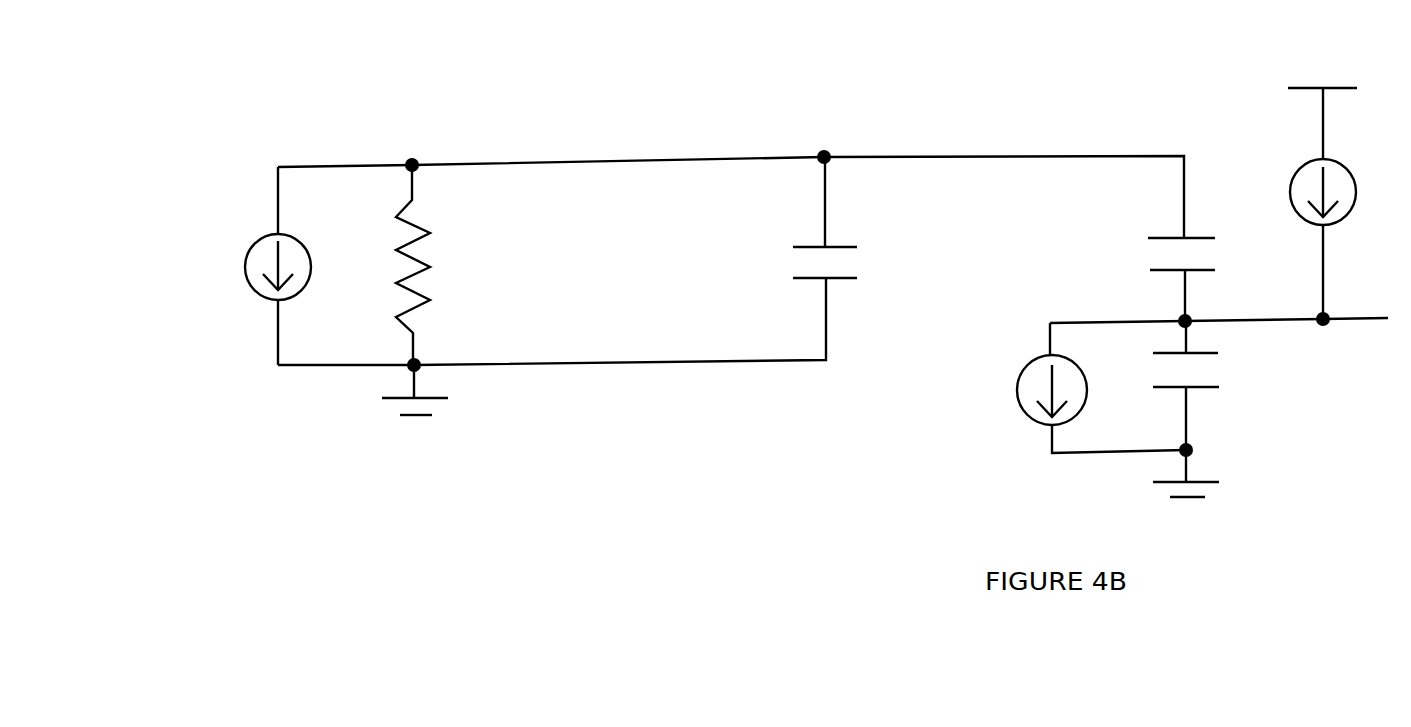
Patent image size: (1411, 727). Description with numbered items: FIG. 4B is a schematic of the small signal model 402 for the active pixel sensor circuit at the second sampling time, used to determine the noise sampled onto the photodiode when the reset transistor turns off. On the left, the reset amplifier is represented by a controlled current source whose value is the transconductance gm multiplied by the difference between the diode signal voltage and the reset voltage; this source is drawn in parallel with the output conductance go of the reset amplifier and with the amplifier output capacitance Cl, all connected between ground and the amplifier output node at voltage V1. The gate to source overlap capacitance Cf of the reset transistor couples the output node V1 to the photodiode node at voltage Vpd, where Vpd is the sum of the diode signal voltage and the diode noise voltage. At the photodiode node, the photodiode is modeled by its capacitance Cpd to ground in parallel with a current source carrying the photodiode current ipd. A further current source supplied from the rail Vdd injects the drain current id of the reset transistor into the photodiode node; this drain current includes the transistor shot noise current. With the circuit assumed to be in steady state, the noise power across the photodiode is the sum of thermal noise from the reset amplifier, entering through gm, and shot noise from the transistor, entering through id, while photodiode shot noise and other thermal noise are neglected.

The small signal model 402 is at (721, 307).
The transconductance gm is at (182, 266).
The output conductance go is at (436, 265).
The node voltage V1 is at (836, 136).
The output capacitance Cl is at (848, 221).
The gate to source overlap capacitance Cf is at (1203, 278).
The photodiode capacitance Cpd is at (1218, 382).
The photodiode current ipd is at (1026, 390).
The photodiode voltage Vpd is at (1352, 339).
The supply voltage Vdd is at (1322, 106).
The drain current id is at (1338, 239).